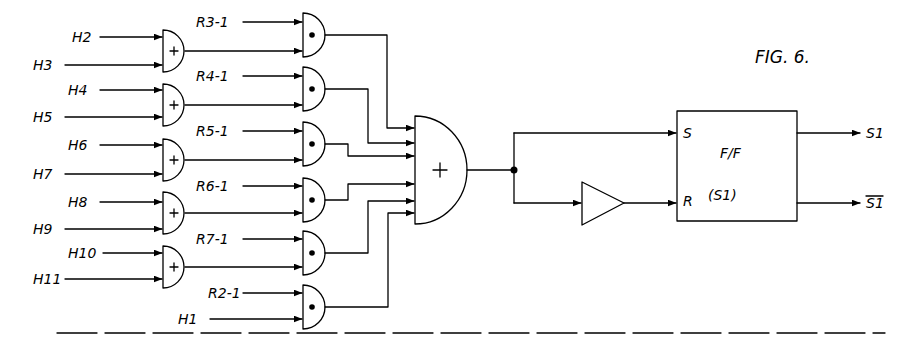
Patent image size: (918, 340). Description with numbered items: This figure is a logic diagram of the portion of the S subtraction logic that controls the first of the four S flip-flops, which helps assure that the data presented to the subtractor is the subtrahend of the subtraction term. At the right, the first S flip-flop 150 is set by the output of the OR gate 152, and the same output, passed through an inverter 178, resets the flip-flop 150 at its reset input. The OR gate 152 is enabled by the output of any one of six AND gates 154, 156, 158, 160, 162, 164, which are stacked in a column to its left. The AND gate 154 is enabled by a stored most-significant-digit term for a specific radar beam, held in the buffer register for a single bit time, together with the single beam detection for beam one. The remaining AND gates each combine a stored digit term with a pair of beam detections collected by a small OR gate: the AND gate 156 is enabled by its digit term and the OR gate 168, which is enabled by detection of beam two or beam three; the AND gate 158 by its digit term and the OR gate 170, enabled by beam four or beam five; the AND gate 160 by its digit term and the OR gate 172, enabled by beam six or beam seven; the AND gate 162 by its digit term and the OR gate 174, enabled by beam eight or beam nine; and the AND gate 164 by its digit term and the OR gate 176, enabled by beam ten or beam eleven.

The S1 flip-flop 150 is at (691, 216).
The OR gate 152 is at (448, 138).
The AND gate 154 is at (326, 292).
The AND gate 156 is at (326, 25).
The AND gate 158 is at (326, 79).
The AND gate 160 is at (326, 134).
The AND gate 162 is at (326, 183).
The AND gate 164 is at (326, 237).
The OR gate 168 is at (174, 30).
The OR gate 170 is at (187, 101).
The OR gate 172 is at (187, 156).
The OR gate 174 is at (187, 211).
The OR gate 176 is at (187, 265).
The inverter 178 is at (607, 211).